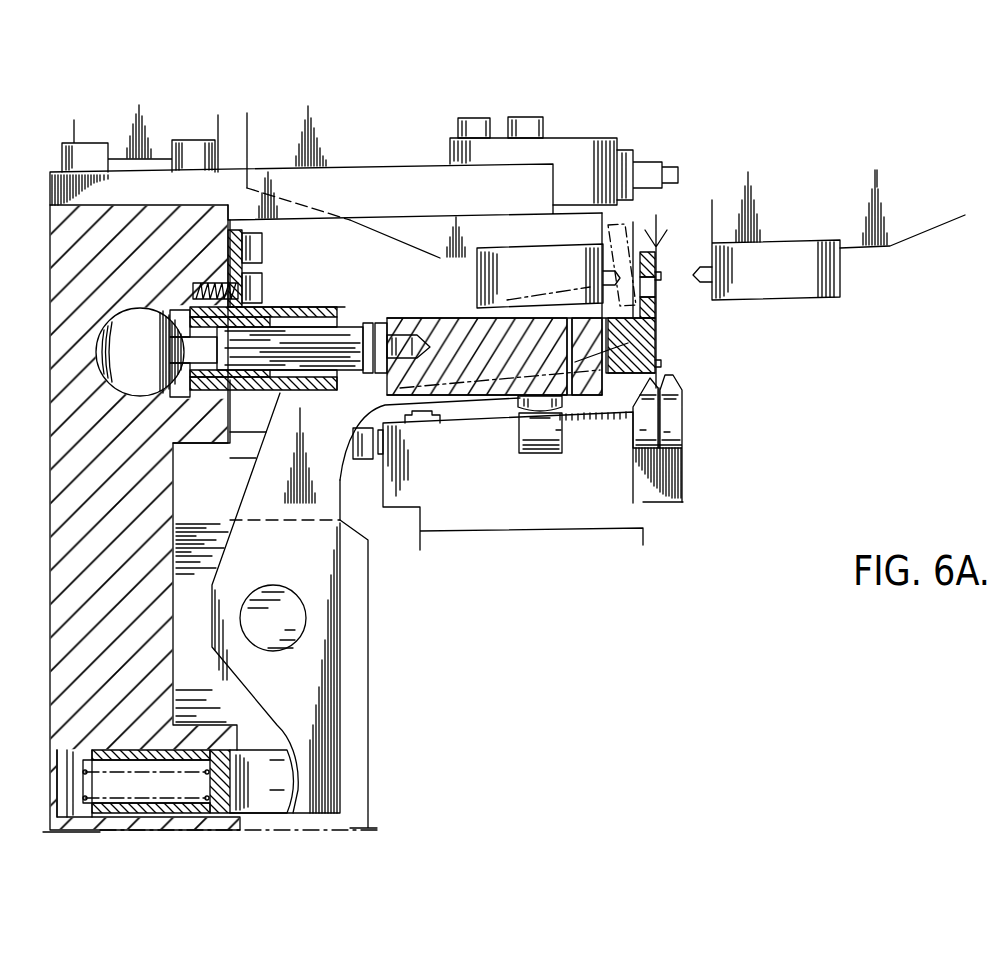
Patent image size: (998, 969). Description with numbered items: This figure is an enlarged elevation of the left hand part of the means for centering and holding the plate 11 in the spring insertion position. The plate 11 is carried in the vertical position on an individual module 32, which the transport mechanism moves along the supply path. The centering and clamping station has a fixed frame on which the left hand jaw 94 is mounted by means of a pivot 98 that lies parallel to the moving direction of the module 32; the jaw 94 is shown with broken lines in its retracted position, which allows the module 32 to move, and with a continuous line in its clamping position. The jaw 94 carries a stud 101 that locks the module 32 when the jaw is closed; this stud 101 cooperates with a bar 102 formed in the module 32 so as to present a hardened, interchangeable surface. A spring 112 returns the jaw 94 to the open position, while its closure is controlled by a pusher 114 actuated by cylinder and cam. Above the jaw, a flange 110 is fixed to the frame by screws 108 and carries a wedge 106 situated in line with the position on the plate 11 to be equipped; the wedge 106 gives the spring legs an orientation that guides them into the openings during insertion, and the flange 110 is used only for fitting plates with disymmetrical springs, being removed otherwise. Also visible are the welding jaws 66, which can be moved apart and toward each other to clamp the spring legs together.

The plate 11 is at (660, 252).
The module 32 is at (683, 460).
The welding jaws 66 is at (503, 280).
The left hand jaw 94 is at (655, 308).
The pivot 98 is at (295, 612).
The stud 101 is at (523, 400).
The bar 102 is at (560, 442).
The wedge 106 is at (650, 172).
The screws 108 is at (527, 125).
The flange 110 is at (592, 152).
The spring 112 is at (183, 800).
The pusher 114 is at (298, 350).